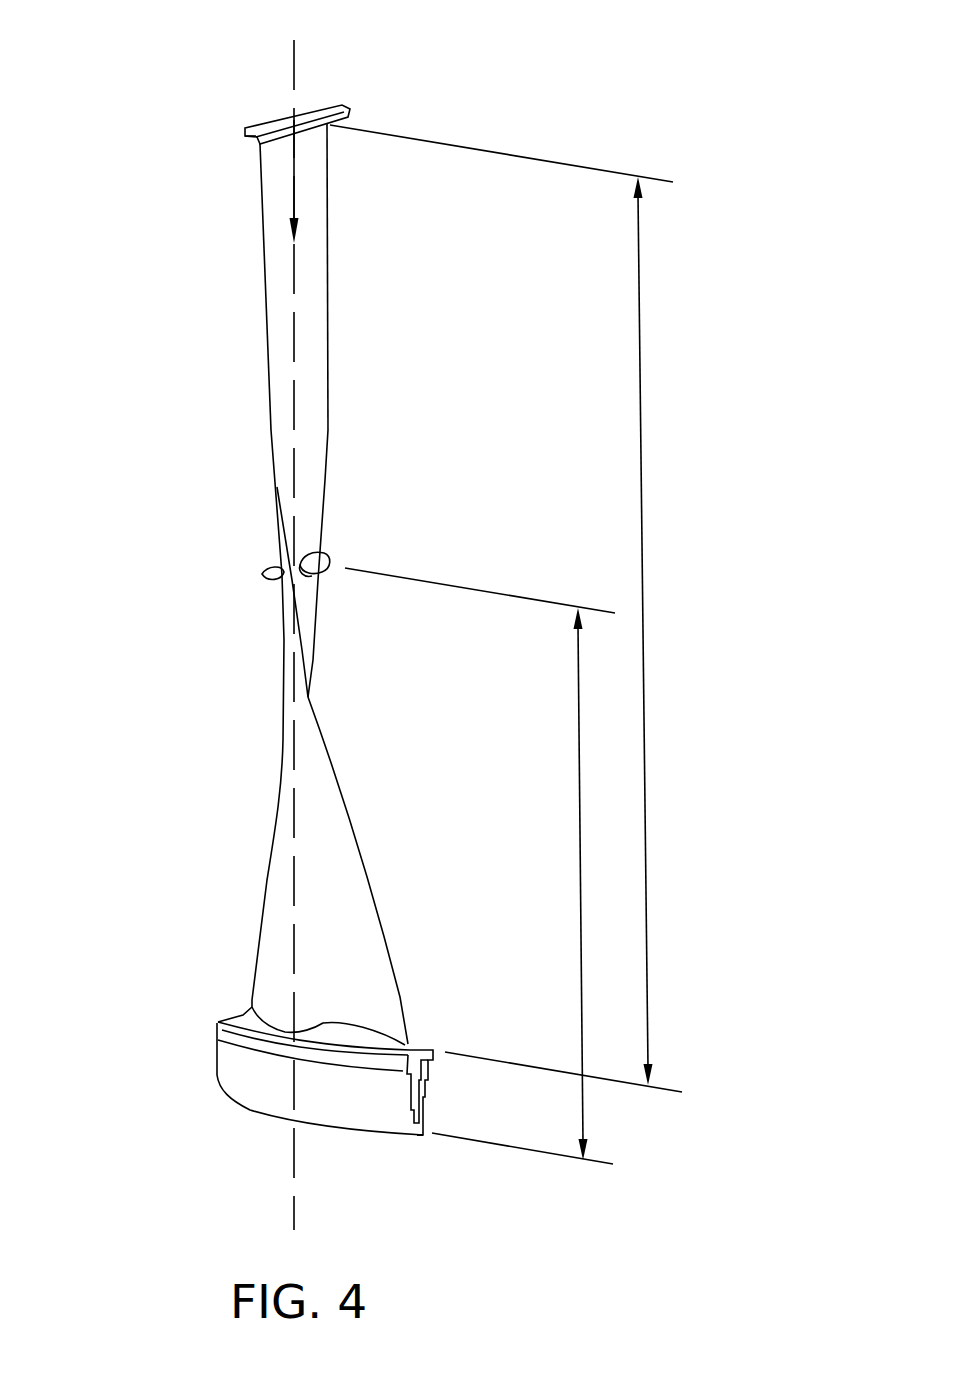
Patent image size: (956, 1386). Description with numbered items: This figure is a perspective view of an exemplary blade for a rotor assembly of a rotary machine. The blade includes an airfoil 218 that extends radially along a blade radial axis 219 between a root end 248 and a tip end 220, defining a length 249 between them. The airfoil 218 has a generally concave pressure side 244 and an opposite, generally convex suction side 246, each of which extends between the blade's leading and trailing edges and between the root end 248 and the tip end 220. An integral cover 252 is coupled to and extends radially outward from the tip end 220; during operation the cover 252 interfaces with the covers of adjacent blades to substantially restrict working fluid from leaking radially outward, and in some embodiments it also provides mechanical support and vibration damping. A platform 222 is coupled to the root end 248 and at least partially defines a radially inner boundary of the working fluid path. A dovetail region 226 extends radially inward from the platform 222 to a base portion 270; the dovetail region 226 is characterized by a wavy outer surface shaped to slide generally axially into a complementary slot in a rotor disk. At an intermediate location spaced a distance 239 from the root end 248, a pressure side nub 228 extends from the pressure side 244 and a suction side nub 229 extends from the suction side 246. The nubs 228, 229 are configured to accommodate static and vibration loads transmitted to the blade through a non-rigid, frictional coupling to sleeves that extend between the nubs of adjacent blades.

The airfoil 218 is at (268, 346).
The blade radial axis 219 is at (295, 112).
The tip end 220 is at (265, 174).
The platform 222 is at (433, 1051).
The dovetail region 226 is at (283, 1083).
The pressure side nub 228 is at (330, 556).
The suction side nub 229 is at (262, 574).
The distance 239 is at (578, 858).
The pressure side 244 is at (317, 249).
The suction side 246 is at (280, 641).
The root end 248 is at (424, 1029).
The length 249 is at (638, 392).
The integral cover 252 is at (349, 110).
The base portion 270 is at (428, 1153).